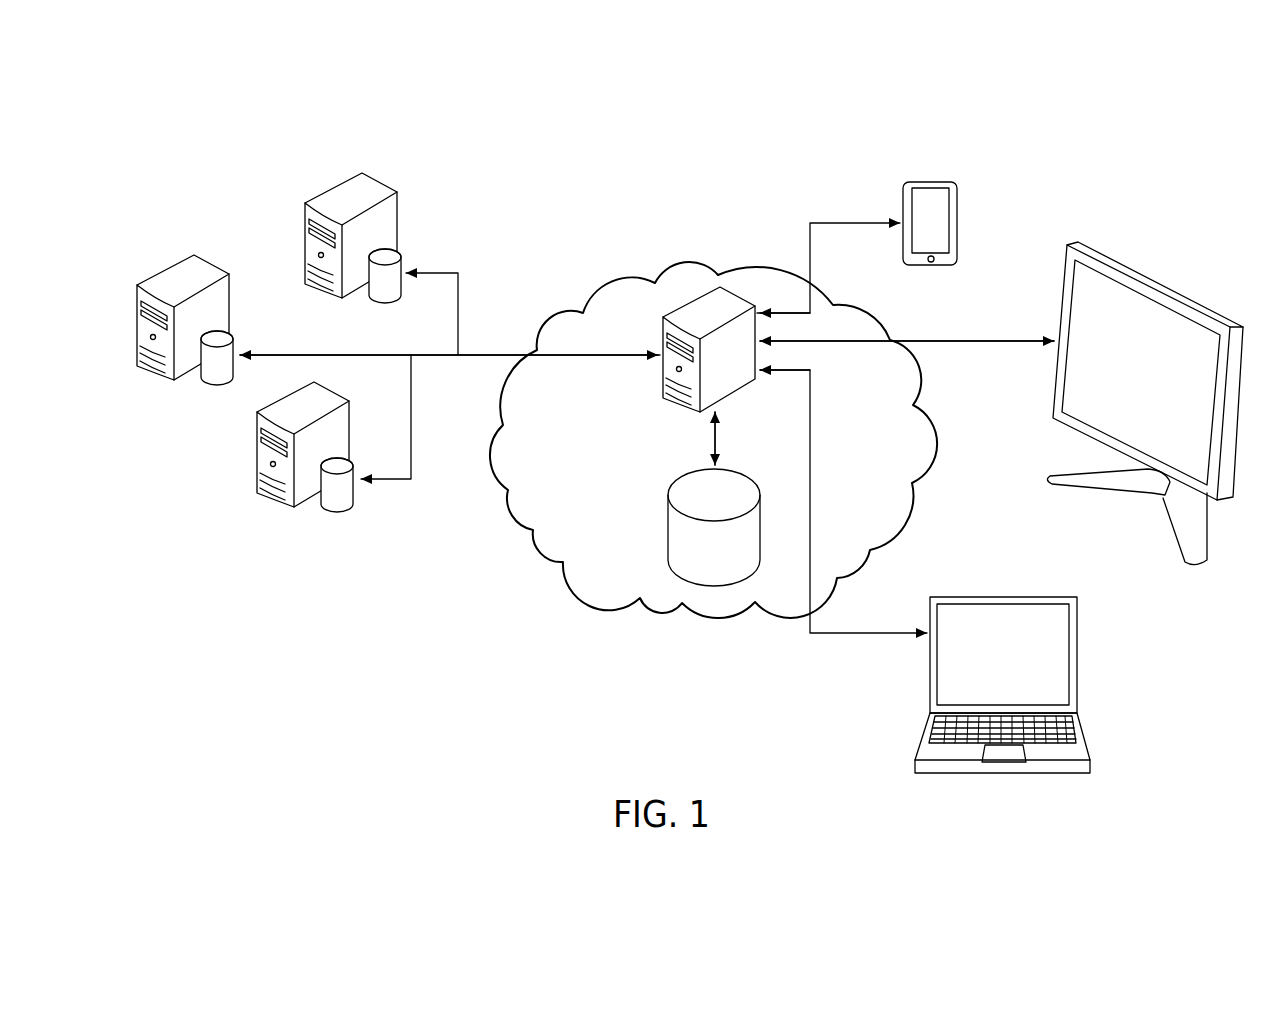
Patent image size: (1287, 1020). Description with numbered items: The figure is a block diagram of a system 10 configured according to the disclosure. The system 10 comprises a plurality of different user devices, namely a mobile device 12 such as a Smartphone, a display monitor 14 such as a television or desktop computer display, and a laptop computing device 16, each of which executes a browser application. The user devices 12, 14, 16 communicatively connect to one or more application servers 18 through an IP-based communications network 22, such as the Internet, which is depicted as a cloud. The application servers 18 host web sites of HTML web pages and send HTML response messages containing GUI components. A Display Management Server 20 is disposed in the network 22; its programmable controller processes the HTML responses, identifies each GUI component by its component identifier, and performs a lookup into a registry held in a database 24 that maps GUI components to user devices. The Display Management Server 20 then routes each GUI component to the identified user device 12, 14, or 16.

The system 10 is at (697, 423).
The mobile device 12 is at (857, 193).
The display monitor 14 is at (1010, 387).
The laptop computing device 16 is at (968, 571).
The application servers 18 is at (397, 302).
The Display Management Server 20 is at (663, 337).
The IP-based communications network 22 is at (663, 618).
The database 24 is at (667, 530).